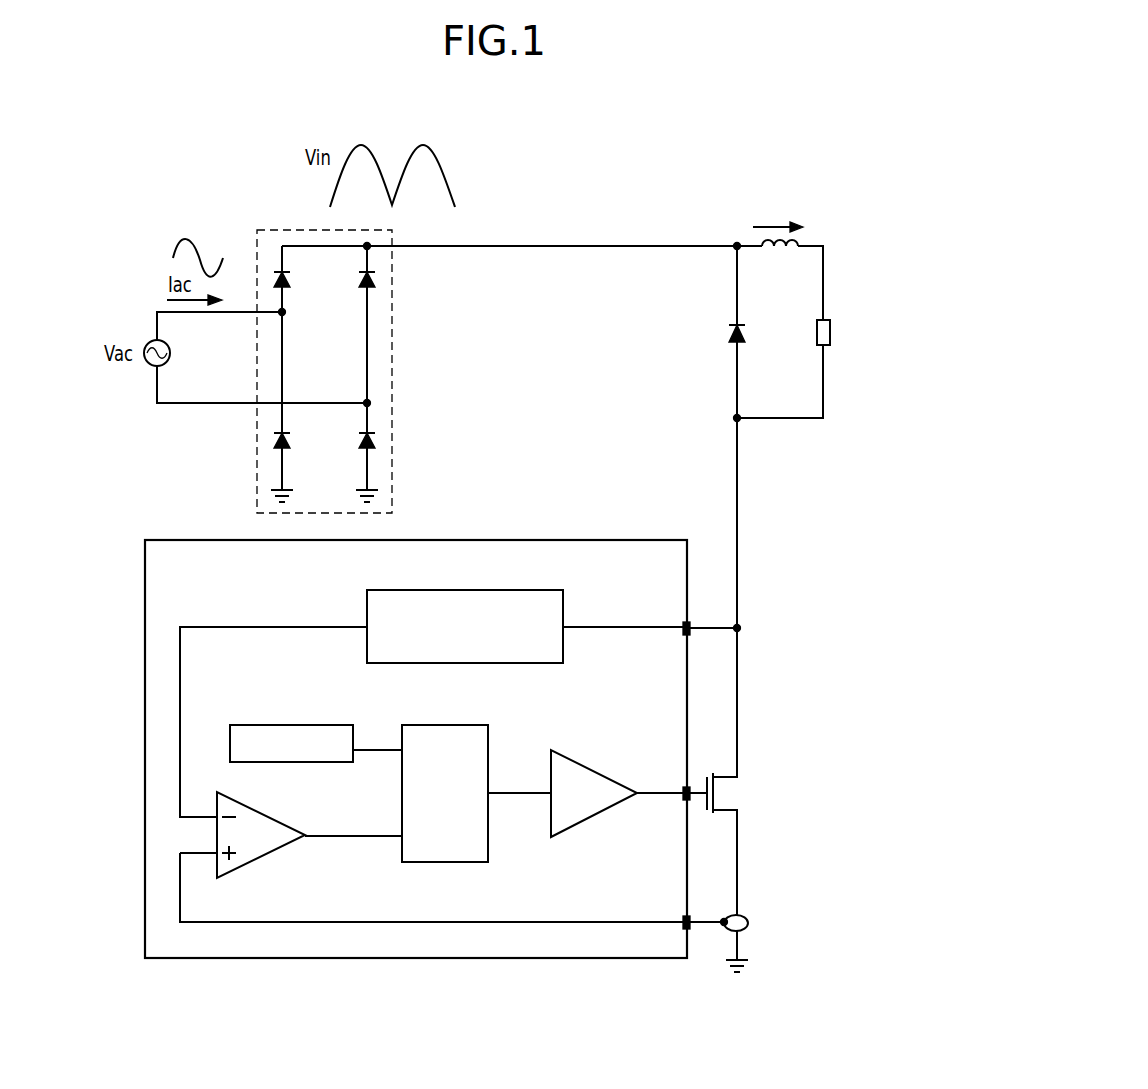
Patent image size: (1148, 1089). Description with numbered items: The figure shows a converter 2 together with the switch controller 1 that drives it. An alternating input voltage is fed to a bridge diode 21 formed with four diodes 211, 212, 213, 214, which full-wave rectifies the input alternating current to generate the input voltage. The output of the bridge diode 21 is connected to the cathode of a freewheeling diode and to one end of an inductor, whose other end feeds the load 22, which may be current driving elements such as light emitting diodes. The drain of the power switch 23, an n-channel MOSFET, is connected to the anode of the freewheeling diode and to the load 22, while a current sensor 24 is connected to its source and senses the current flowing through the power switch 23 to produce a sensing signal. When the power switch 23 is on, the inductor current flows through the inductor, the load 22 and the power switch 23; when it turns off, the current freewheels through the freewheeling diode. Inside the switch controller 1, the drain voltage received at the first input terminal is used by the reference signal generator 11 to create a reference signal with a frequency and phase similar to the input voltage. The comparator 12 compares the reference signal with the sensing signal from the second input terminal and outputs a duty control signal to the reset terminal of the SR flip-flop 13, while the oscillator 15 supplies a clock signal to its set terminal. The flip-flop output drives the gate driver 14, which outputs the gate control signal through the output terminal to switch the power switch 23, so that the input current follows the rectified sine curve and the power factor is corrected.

The switch controller 1 is at (360, 960).
The converter 2 is at (786, 385).
The reference signal generator 11 is at (563, 603).
The comparator 12 is at (262, 858).
The SR flip-flop 13 is at (446, 725).
The gate driver 14 is at (595, 818).
The oscillator 15 is at (293, 725).
The bridge diode 21 is at (499, 371).
The diode 211 is at (290, 276).
The diode 212 is at (290, 437).
The diode 213 is at (375, 276).
The diode 214 is at (375, 437).
The load 22 is at (831, 332).
The power switch 23 is at (740, 793).
The current sensor 24 is at (749, 922).